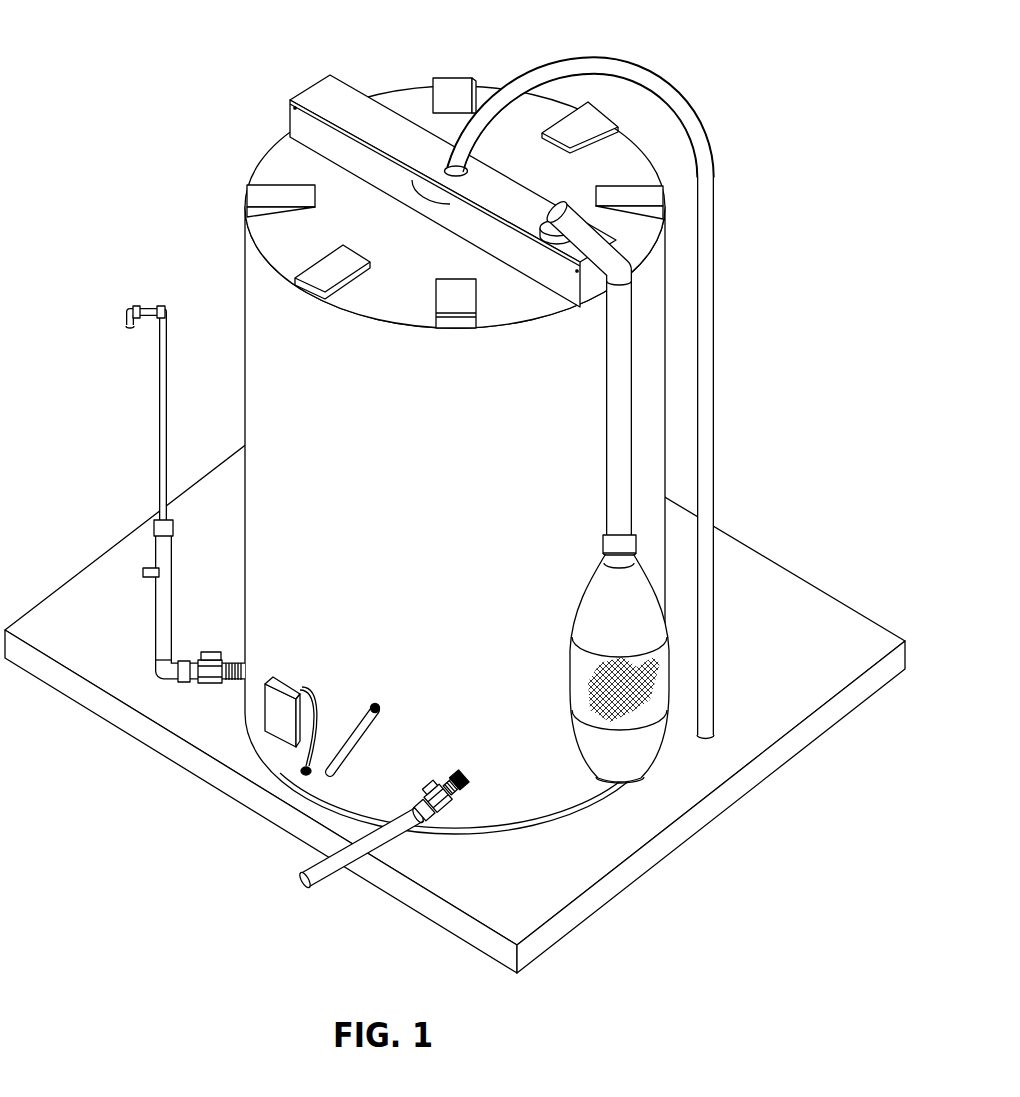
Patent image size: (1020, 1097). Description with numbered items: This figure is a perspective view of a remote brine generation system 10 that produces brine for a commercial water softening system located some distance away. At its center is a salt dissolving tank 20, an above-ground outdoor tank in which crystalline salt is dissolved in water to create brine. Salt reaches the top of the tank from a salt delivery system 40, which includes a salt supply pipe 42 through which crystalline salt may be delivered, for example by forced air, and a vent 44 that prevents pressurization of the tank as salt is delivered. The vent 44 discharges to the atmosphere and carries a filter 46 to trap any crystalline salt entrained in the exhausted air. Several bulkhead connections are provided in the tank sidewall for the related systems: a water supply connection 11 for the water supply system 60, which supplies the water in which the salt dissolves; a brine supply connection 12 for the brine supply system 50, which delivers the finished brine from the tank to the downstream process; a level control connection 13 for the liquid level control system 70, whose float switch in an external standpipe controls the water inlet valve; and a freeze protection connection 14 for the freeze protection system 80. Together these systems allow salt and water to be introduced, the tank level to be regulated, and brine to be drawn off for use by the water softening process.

The brine generation system 10 is at (808, 88).
The water supply connection 11 is at (373, 703).
The brine supply connection 12 is at (458, 777).
The level control connection 13 is at (240, 658).
The freeze protection connection 14 is at (311, 767).
The salt dissolving tank 20 is at (262, 155).
The salt delivery system 40 is at (652, 372).
The salt supply pipe 42 is at (625, 62).
The vent 44 is at (607, 374).
The filter 46 is at (568, 667).
The brine supply system 50 is at (411, 810).
The water supply system 60 is at (387, 703).
The liquid level control system 70 is at (156, 494).
The freeze protection system 80 is at (246, 758).